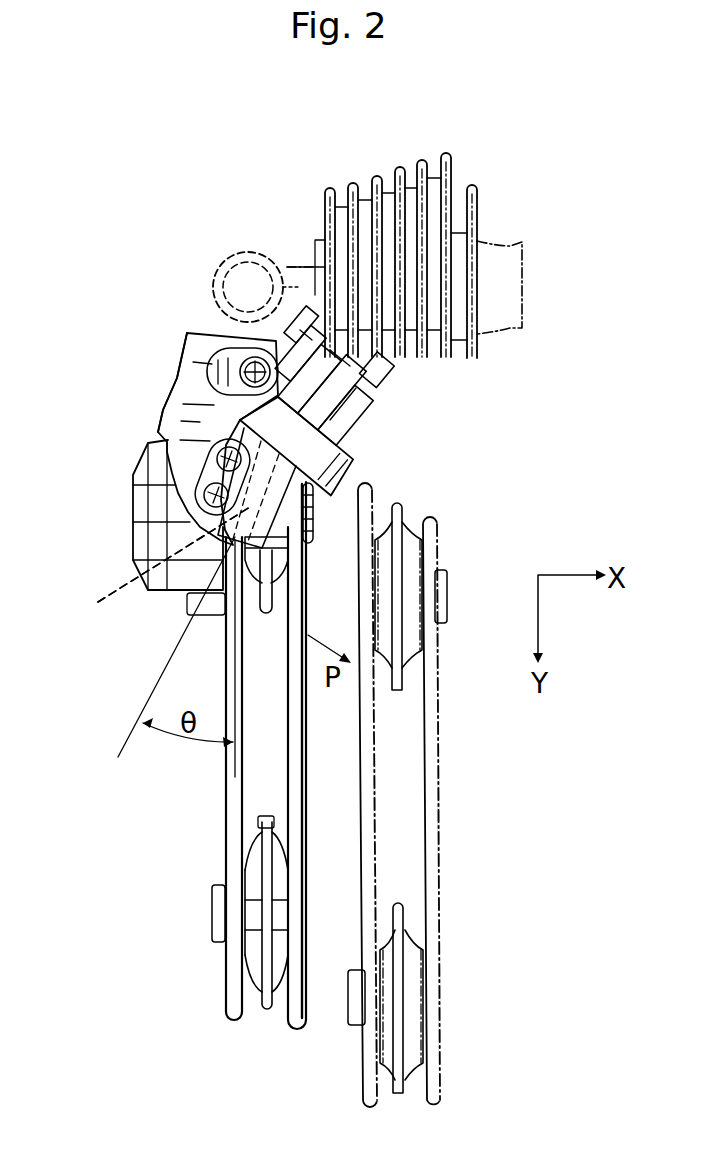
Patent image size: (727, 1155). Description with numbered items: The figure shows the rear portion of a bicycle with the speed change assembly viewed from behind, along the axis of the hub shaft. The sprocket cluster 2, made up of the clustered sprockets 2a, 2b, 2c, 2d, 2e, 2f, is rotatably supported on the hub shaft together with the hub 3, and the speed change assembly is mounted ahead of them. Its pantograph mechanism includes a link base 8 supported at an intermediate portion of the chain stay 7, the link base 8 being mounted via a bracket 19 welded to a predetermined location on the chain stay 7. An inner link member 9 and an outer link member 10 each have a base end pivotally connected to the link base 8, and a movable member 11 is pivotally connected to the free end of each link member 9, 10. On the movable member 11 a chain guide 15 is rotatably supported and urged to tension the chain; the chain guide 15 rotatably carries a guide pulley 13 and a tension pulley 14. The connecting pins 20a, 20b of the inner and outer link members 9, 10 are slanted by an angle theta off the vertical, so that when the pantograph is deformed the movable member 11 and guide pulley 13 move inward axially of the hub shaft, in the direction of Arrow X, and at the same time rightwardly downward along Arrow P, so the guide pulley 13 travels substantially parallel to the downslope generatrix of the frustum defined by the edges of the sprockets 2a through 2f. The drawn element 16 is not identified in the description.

The sprocket cluster 2 is at (476, 152).
The clustered sprocket 2a is at (326, 176).
The clustered sprocket 2b is at (349, 180).
The clustered sprocket 2c is at (377, 175).
The clustered sprocket 2d is at (400, 165).
The clustered sprocket 2e is at (422, 158).
The clustered sprocket 2f is at (446, 155).
The hub 3 is at (512, 243).
The chain stay 7 is at (227, 262).
The link base 8 is at (193, 398).
The inner link member 9 is at (317, 527).
The outer link member 10 is at (158, 414).
The movable member 11 is at (132, 509).
The guide pulley 13 is at (265, 614).
The tension pulley 14 is at (264, 1010).
The chain guide 15 is at (225, 807).
The mounting bolt 16 is at (395, 381).
The bracket 19 is at (240, 347).
The connecting pin 20a is at (163, 535).
The connecting pin 20b is at (174, 554).